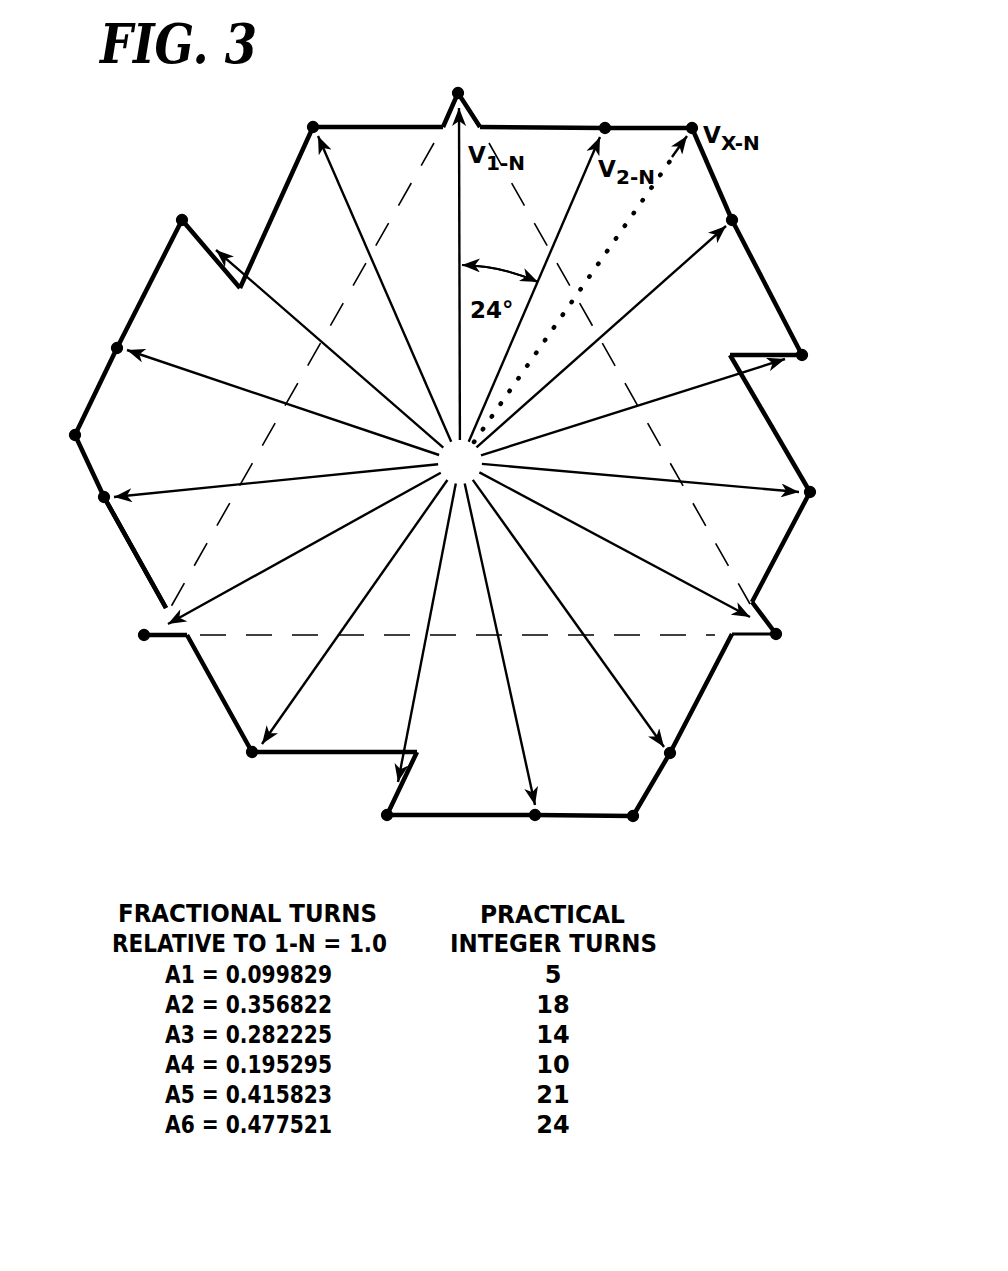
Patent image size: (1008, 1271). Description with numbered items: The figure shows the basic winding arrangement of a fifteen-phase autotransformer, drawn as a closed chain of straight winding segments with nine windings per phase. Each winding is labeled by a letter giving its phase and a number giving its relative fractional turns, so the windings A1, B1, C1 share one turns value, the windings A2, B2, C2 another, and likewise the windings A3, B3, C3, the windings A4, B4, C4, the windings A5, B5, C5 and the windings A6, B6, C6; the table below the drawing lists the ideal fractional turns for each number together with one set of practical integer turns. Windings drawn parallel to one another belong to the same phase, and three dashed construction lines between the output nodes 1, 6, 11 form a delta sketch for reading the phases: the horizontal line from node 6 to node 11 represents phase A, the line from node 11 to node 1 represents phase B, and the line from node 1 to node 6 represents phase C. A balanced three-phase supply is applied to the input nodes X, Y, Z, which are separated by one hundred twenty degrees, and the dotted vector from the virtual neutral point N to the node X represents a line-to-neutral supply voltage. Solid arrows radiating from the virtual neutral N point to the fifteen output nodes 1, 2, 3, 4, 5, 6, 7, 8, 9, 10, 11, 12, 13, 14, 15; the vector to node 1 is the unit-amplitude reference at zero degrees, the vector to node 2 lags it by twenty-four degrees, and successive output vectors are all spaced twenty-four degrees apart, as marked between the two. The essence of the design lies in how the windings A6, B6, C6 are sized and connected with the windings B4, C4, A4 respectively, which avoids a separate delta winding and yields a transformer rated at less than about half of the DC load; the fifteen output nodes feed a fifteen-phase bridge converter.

The output node 1 is at (459, 80).
The output node 2 is at (606, 112).
The output node 3 is at (735, 216).
The output node 4 is at (804, 355).
The output node 5 is at (812, 492).
The output node 6 is at (779, 635).
The output node 7 is at (672, 756).
The output node 8 is at (536, 831).
The output node 9 is at (386, 818).
The output node 10 is at (250, 754).
The output node 11 is at (142, 637).
The output node 12 is at (102, 497).
The output node 13 is at (115, 348).
The output node 14 is at (181, 219).
The output node 15 is at (313, 115).
The input node X is at (703, 112).
The input node Y is at (636, 820).
The input node Z is at (74, 434).
The virtual neutral point N is at (456, 456).
The winding A1 is at (757, 637).
The winding A2 is at (553, 127).
The winding A3 is at (572, 816).
The winding A4 is at (752, 355).
The winding A5 is at (445, 816).
The winding A6 is at (305, 752).
The winding B1 is at (160, 608).
The winding B2 is at (787, 554).
The winding B3 is at (94, 390).
The winding B4 is at (410, 770).
The winding B5 is at (148, 283).
The winding B6 is at (273, 225).
The winding C1 is at (757, 604).
The winding C2 is at (140, 560).
The winding C3 is at (710, 170).
The winding C4 is at (209, 251).
The winding C5 is at (765, 284).
The winding C6 is at (771, 412).